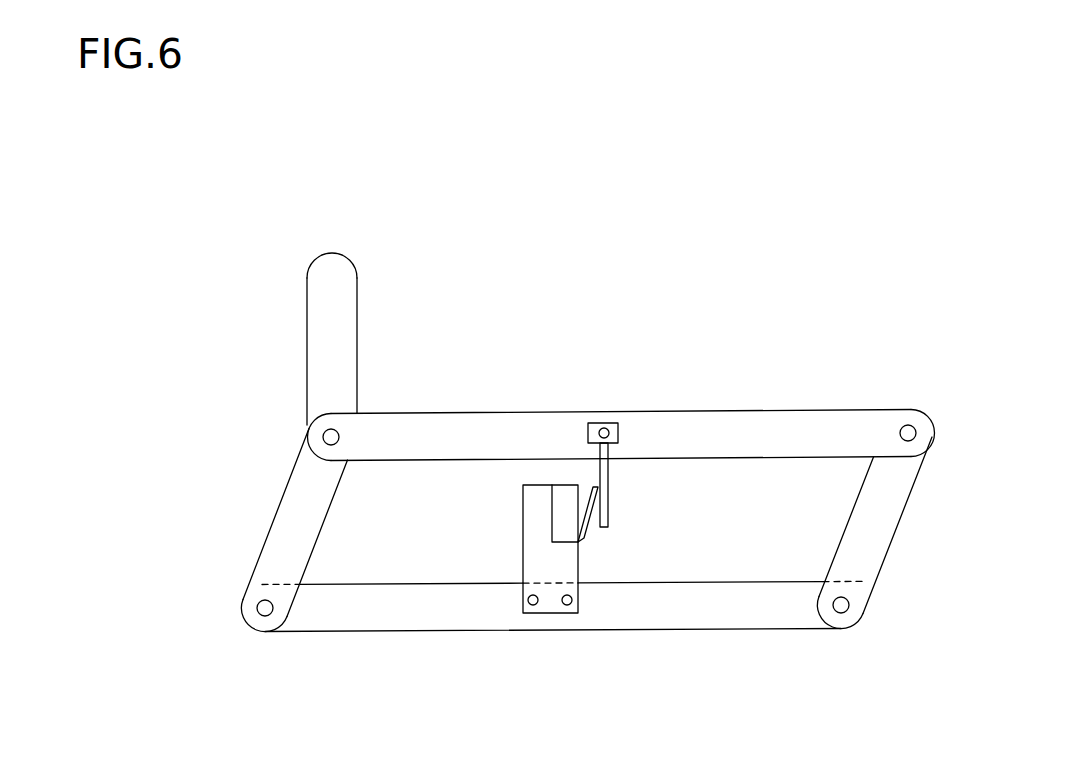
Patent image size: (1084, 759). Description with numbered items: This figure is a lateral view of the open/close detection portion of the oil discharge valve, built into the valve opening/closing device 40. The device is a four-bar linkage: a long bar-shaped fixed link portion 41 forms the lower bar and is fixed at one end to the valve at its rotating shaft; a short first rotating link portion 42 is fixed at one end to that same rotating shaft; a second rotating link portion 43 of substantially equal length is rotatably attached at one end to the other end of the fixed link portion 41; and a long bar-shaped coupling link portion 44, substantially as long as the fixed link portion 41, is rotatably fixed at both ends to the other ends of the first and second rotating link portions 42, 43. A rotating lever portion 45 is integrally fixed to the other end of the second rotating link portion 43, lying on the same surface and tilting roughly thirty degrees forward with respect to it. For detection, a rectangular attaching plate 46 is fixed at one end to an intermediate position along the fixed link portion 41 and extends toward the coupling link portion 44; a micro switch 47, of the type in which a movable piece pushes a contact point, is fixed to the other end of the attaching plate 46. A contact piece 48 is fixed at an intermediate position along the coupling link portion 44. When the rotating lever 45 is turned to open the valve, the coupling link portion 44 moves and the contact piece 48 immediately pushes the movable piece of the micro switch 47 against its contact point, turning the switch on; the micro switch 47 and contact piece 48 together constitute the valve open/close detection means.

The valve opening/closing device 40 is at (710, 400).
The fixed link portion 41 is at (457, 632).
The first rotating link portion 42 is at (898, 527).
The second rotating link portion 43 is at (292, 470).
The coupling link portion 44 is at (798, 410).
The rotating lever portion 45 is at (357, 340).
The attaching plate 46 is at (581, 554).
The micro switch 47 is at (553, 514).
The contact piece 48 is at (609, 492).